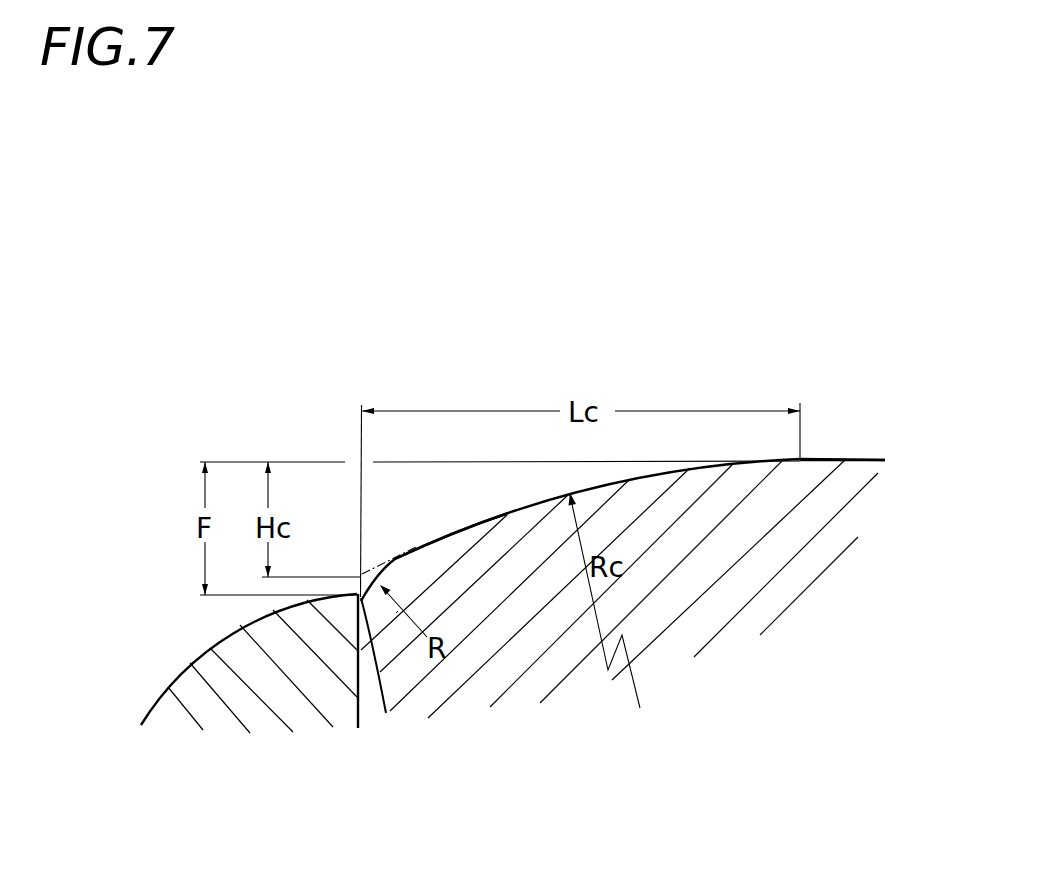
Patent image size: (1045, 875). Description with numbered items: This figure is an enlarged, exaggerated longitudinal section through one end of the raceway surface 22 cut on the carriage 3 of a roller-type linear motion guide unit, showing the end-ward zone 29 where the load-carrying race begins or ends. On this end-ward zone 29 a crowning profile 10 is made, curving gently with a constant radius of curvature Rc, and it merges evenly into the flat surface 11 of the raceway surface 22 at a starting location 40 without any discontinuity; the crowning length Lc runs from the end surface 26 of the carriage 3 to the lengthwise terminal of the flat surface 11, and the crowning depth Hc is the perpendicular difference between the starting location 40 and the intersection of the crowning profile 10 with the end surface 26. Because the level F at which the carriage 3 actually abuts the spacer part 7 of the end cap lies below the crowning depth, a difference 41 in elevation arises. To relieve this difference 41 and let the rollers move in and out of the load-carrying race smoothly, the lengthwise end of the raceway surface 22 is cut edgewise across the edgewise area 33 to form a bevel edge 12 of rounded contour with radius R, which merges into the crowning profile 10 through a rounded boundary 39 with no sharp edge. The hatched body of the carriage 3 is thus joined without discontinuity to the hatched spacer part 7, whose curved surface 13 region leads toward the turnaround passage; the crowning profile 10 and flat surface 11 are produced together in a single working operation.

The carriage 3 is at (723, 600).
The spacer part 7 is at (240, 698).
The crowning profile 10 is at (620, 481).
The flat surface 11 is at (862, 456).
The bevel edge of rounded contour 12 is at (390, 558).
The dome surface of projection 13 is at (223, 632).
The raceway surface 22 is at (808, 458).
The end surface 26 is at (350, 690).
The end-ward zone 29 is at (577, 657).
The edgewise area 33 is at (397, 612).
The boundary 39 is at (419, 546).
The starting location 40 is at (797, 458).
The difference in elevation 41 is at (386, 713).